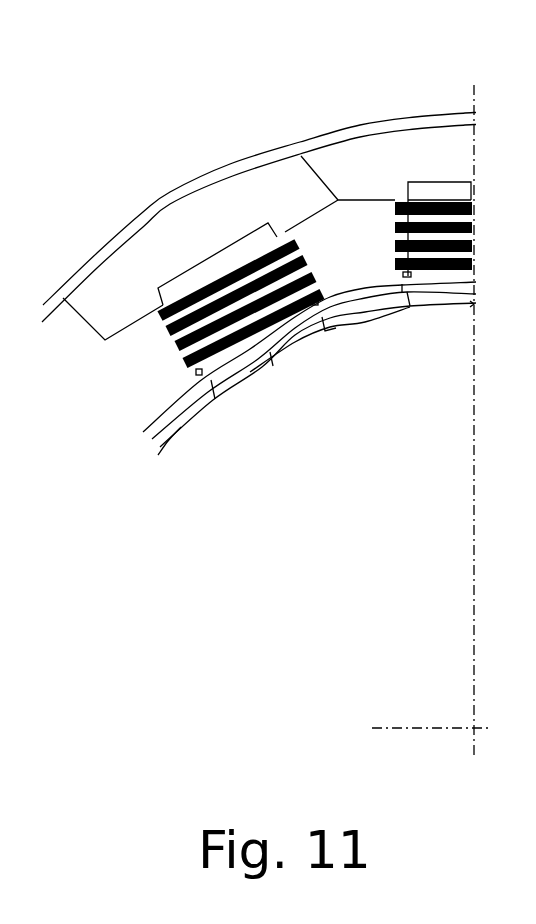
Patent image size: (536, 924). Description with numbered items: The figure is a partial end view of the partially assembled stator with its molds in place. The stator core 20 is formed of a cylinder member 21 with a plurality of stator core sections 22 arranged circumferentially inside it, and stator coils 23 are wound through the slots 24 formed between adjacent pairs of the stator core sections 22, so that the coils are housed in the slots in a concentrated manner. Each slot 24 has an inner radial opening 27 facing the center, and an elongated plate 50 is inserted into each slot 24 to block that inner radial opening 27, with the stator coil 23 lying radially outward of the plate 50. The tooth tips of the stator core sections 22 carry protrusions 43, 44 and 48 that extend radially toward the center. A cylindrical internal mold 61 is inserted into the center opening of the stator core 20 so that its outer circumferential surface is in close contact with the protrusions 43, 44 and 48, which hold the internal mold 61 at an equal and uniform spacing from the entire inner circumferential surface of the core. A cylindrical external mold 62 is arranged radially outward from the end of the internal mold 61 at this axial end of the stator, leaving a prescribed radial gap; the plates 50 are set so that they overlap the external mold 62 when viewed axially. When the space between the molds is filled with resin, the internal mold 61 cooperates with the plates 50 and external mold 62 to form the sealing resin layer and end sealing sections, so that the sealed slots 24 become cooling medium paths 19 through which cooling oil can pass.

The cooling medium path 19 is at (342, 134).
The stator core 20 is at (260, 193).
The cylinder member 21 is at (446, 113).
The stator core section 22 is at (222, 194).
The stator coil 23 is at (301, 233).
The slot 24 is at (342, 137).
The inner radial opening 27 is at (355, 313).
The protrusion 43 is at (213, 390).
The protrusion 44 is at (333, 328).
The protrusion 48 is at (272, 362).
The plate 50 is at (386, 304).
The cylindrical internal mold 61 is at (155, 458).
The cylindrical external mold 62 is at (150, 433).